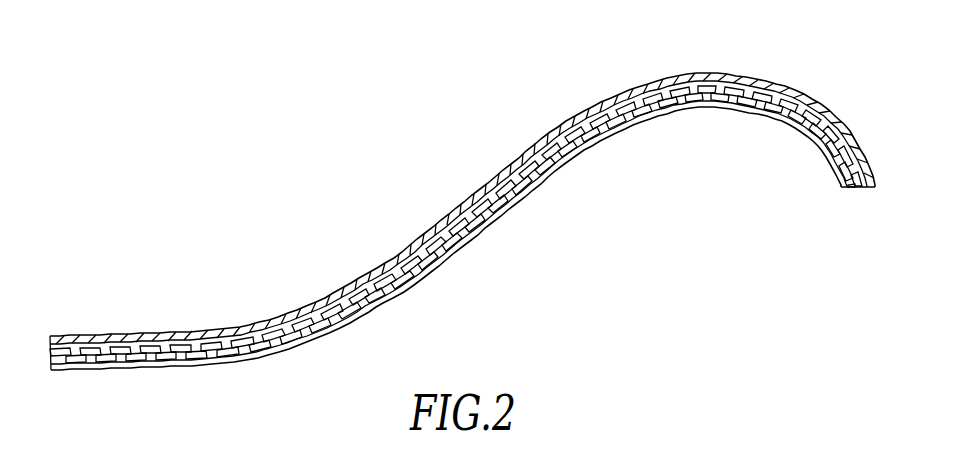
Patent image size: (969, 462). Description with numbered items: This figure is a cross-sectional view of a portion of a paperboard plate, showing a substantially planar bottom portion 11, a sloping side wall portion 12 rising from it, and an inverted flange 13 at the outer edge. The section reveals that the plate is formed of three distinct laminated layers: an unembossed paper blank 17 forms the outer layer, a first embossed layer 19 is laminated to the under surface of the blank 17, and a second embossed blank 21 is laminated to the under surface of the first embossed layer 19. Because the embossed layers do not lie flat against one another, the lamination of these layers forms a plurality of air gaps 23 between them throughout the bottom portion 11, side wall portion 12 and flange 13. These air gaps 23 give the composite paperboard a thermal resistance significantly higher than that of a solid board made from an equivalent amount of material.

The bottom portion 11 is at (116, 336).
The side wall portion 12 is at (468, 194).
The inverted flange 13 is at (770, 81).
The unembossed paper blank 17 is at (858, 192).
The first embossed layer 19 is at (573, 157).
The second embossed blank 21 is at (494, 214).
The air gaps 23 is at (406, 288).